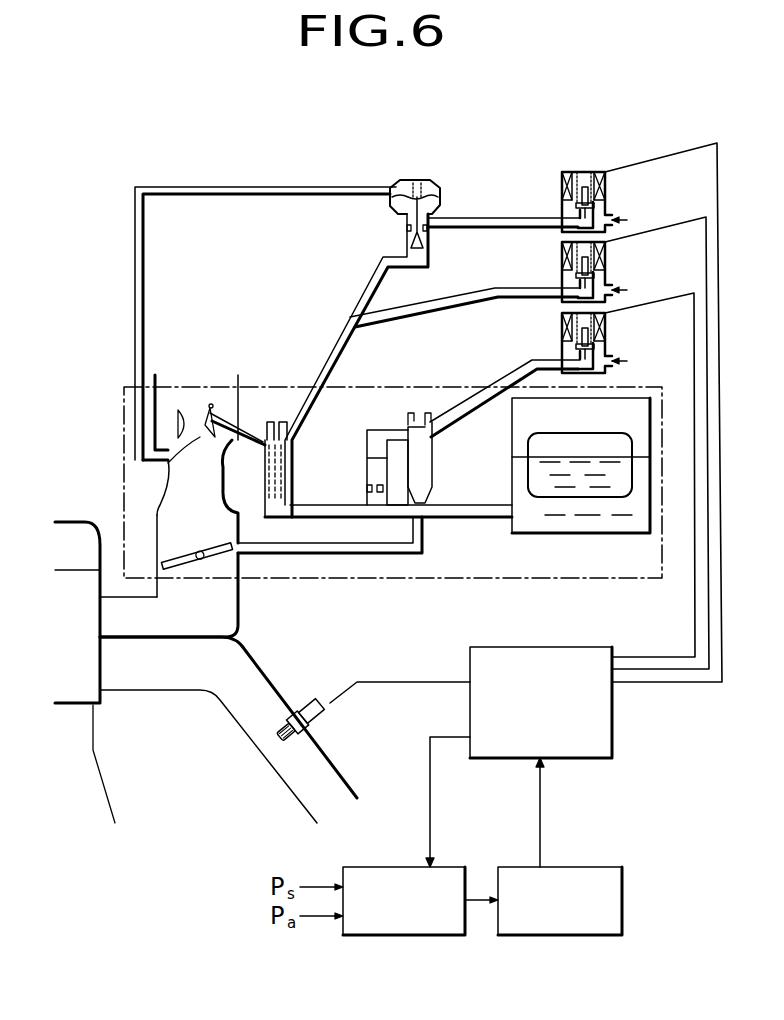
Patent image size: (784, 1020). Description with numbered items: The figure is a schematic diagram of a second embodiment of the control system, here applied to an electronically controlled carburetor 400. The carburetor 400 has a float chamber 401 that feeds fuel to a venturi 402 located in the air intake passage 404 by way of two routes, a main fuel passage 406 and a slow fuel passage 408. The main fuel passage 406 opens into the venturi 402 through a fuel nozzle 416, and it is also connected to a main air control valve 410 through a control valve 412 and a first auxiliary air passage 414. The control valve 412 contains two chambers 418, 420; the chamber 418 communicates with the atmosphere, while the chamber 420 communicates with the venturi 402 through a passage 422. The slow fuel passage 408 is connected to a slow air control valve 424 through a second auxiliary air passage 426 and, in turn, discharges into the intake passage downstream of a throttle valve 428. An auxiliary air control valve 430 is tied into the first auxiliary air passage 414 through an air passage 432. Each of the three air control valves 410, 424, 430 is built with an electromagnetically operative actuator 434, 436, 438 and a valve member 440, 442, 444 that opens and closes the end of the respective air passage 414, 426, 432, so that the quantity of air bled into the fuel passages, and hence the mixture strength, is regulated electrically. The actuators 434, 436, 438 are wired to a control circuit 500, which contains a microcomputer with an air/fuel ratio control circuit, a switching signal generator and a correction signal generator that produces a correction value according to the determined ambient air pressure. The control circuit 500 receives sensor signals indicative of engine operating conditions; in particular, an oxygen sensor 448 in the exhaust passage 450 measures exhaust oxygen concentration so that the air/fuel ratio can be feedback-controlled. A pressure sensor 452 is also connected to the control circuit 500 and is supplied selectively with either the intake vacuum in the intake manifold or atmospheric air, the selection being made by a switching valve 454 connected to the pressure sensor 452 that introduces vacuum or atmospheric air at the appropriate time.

The carburetor 400 is at (600, 578).
The float chamber 401 is at (571, 518).
The venturi 402 is at (168, 466).
The air intake passage 404 is at (157, 512).
The main fuel passage 406 is at (285, 503).
The slow fuel passage 408 is at (422, 456).
The main air control valve 410 is at (605, 206).
The control valve 412 is at (408, 232).
The first auxiliary air passage 414 is at (350, 332).
The fuel nozzle 416 is at (250, 433).
The chamber 418 is at (392, 197).
The chamber 420 is at (413, 182).
The passage 422 is at (145, 245).
The slow air control valve 424 is at (605, 330).
The second auxiliary air passage 426 is at (490, 392).
The throttle valve 428 is at (182, 565).
The auxiliary air control valve 430 is at (605, 258).
The air passage 432 is at (418, 312).
The electromagnetically operative actuator 434 is at (605, 182).
The electromagnetically operative actuator 436 is at (566, 328).
The electromagnetically operative actuator 438 is at (566, 266).
The valve member 440 is at (576, 207).
The valve member 442 is at (576, 351).
The valve member 444 is at (576, 280).
The oxygen sensor 448 is at (330, 715).
The exhaust passage 450 is at (253, 707).
The pressure sensor 452 is at (578, 935).
The switching valve 454 is at (400, 935).
The control circuit 500 is at (612, 718).